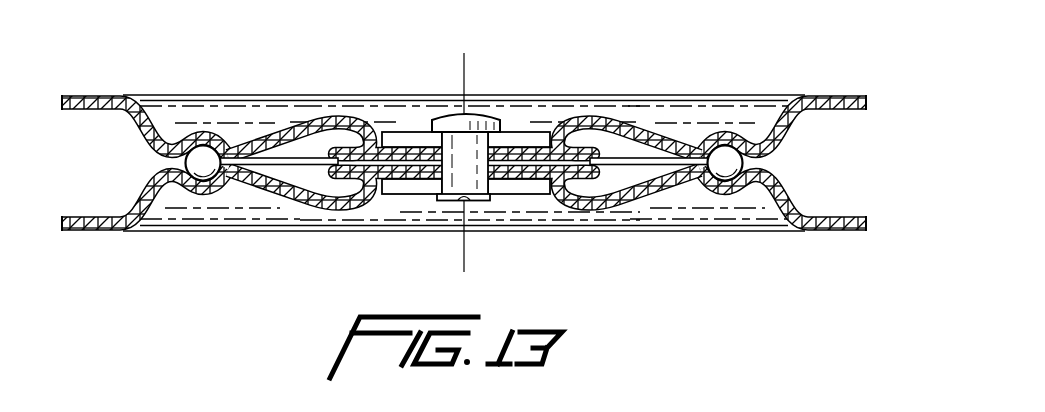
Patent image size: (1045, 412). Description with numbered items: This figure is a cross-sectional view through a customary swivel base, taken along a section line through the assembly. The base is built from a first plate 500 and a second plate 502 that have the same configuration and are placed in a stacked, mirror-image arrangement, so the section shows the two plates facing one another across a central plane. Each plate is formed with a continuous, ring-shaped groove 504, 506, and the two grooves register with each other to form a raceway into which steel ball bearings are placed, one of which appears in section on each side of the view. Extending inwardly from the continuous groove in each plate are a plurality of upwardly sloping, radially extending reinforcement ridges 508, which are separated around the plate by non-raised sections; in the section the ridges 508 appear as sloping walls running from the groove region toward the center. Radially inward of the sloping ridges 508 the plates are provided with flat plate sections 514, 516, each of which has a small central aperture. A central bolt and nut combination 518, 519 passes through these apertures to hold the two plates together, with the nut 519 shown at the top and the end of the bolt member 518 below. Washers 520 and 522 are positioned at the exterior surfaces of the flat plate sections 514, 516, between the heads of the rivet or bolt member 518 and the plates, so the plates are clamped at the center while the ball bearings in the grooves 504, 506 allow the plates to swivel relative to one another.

The first plate 500 is at (84, 92).
The second plate 502 is at (84, 240).
The ring-shaped groove 504 is at (228, 145).
The ring-shaped groove 506 is at (205, 180).
The reinforcement ridges 508 is at (314, 119).
The flat plate section 514 is at (401, 143).
The flat plate section 516 is at (392, 186).
The bolt member 518 is at (488, 196).
The nut 519 is at (487, 112).
The washer 520 is at (547, 119).
The washer 522 is at (550, 191).